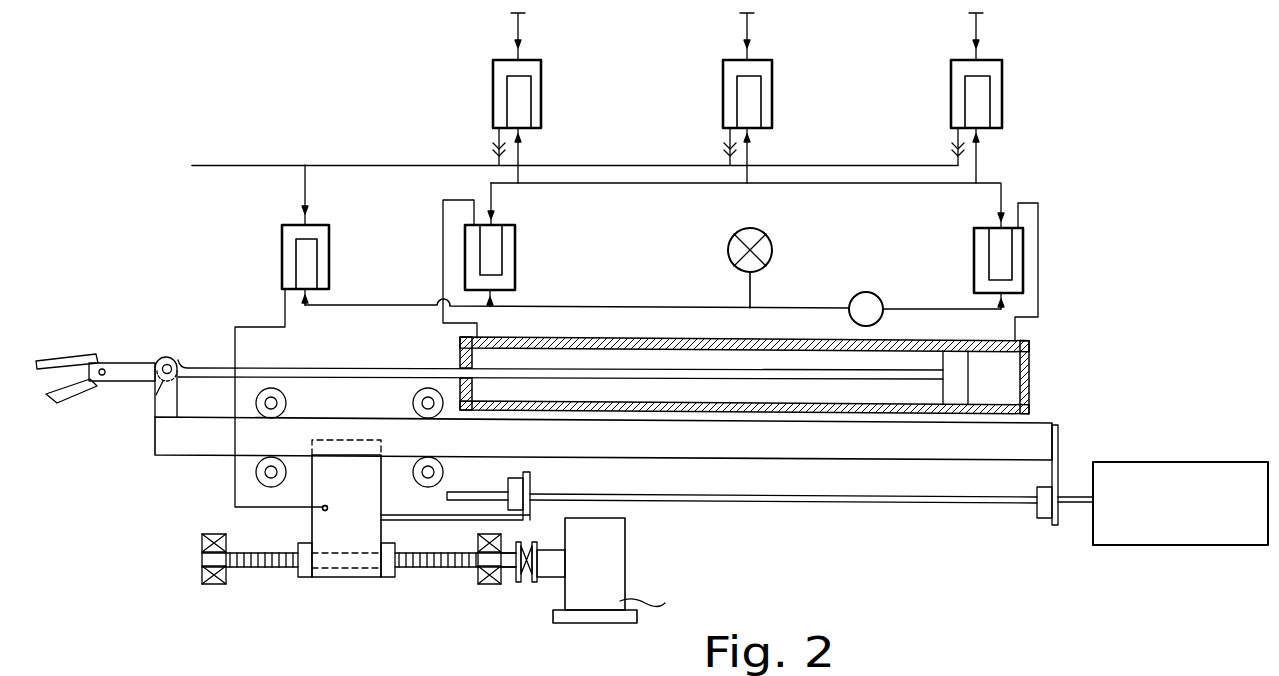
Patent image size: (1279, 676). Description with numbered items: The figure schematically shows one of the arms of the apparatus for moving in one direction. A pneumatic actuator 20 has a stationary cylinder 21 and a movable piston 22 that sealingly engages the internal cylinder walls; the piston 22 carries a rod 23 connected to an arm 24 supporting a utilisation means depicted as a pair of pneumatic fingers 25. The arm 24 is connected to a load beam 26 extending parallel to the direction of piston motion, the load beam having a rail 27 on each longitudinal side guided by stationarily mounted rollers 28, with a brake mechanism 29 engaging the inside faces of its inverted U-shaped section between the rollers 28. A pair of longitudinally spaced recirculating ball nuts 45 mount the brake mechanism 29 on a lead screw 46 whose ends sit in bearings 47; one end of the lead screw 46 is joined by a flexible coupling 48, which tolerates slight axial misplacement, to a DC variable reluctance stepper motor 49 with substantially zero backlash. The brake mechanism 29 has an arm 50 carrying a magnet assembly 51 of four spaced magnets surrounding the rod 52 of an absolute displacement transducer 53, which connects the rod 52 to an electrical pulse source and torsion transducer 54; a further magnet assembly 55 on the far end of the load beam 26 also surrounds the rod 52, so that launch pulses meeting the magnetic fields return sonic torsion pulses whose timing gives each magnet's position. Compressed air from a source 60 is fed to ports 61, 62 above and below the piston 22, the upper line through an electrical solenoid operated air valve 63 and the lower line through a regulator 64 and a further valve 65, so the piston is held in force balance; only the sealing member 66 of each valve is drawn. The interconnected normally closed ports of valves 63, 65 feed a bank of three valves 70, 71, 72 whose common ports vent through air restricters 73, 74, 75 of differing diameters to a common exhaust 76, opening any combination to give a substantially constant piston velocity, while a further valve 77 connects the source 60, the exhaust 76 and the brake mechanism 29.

The pneumatic actuator 20 is at (787, 336).
The stationary cylinder 21 is at (645, 338).
The movable piston 22 is at (955, 392).
The rod 23 is at (362, 367).
The arm 24 is at (156, 387).
The pneumatic fingers 25 is at (68, 358).
The load beam 26 is at (812, 448).
The rail 27 is at (345, 419).
The rollers 28 is at (269, 388).
The brake mechanism 29 is at (315, 519).
The recirculating ball nuts 45 is at (307, 558).
The lead screw 46 is at (243, 570).
The bearings 47 is at (202, 575).
The flexible coupling 48 is at (537, 543).
The DC variable reluctance stepper motor 49 is at (608, 567).
The arm 50 is at (428, 520).
The magnet assembly 51 is at (497, 502).
The rod 52 is at (866, 503).
The absolute displacement transducer 53 is at (973, 508).
The electrical pulse source and torsion transducer 54 is at (1126, 545).
The further magnet assembly 55 is at (1043, 506).
The source 60 is at (770, 242).
The port 61 is at (460, 337).
The port 62 is at (1020, 338).
The electrical solenoid operated air valve 63 is at (507, 243).
The regulator 64 is at (866, 292).
The further electrical solenoid operated air valve 65 is at (1018, 242).
The sealing member 66 is at (518, 103).
The electrical solenoid operated air valve 70 is at (537, 70).
The electrical solenoid operated air valve 71 is at (765, 70).
The electrical solenoid operated air valve 72 is at (993, 70).
The air restricter 73 is at (496, 151).
The air restricter 74 is at (727, 151).
The air restricter 75 is at (955, 151).
The common exhaust 76 is at (257, 165).
The further electrical solenoid operated air valve 77 is at (288, 236).